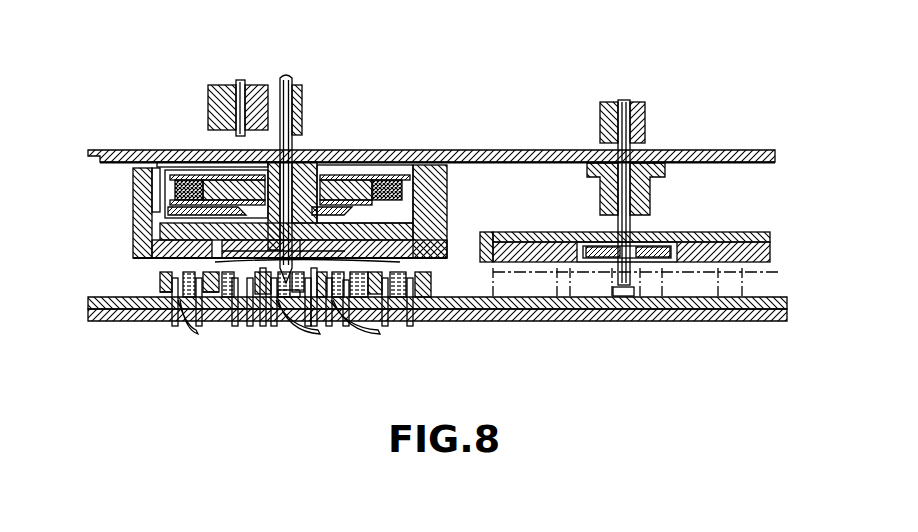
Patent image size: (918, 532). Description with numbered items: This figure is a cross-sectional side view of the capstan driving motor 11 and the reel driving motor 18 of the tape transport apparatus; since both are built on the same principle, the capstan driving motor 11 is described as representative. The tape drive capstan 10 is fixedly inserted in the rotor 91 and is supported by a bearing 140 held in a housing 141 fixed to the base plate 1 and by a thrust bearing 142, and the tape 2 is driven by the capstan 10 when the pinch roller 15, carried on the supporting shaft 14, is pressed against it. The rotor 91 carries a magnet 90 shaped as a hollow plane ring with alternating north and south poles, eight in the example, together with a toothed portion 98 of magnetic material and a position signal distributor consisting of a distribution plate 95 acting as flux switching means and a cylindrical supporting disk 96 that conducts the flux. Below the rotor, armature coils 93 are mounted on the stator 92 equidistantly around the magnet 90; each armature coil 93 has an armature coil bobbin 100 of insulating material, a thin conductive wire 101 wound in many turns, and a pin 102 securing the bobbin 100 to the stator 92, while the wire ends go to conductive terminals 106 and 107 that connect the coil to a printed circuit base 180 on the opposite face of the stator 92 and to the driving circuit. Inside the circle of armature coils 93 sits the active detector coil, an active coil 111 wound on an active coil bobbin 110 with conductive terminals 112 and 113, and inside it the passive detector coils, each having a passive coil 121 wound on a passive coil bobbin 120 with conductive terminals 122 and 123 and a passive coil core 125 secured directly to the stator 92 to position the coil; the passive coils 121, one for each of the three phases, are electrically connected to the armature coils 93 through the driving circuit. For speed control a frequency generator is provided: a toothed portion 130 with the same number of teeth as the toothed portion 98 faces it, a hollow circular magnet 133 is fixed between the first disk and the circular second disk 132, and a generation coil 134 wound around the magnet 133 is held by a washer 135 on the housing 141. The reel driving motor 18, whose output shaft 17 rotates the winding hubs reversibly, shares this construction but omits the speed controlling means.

The base plate 1 is at (117, 150).
The tape 2 is at (294, 106).
The tape drive capstan 10 is at (300, 130).
The capstan driving motor 11 is at (398, 72).
The supporting shaft 14 is at (241, 80).
The pinch roller 15 is at (268, 107).
The output shaft 17 is at (647, 120).
The reel driving motor 18 is at (571, 110).
The magnet 90 is at (424, 236).
The rotor 91 is at (135, 185).
The stator 92 is at (90, 300).
The armature coils 93 is at (159, 273).
The distribution plate 95 is at (370, 244).
The supporting disk 96 is at (150, 238).
The toothed portion 98 is at (400, 200).
The armature coil bobbin 100 is at (152, 312).
The conductive wire 101 is at (160, 283).
The pin 102 is at (197, 325).
The conductive terminal 106 is at (166, 328).
The conductive terminal 107 is at (222, 328).
The active coil bobbin 110 is at (245, 322).
The active coil 111 is at (660, 309).
The conductive terminal 112 is at (282, 330).
The conductive terminal 113 is at (400, 322).
The passive coil bobbin 120 is at (348, 257).
The passive coil 121 is at (658, 311).
The conductive terminal 122 is at (303, 324).
The conductive terminal 123 is at (322, 334).
The passive coil core 125 is at (372, 334).
The toothed portion 130 is at (455, 162).
The second disk 132 is at (380, 182).
The magnet 133 is at (400, 182).
The generation coil 134 is at (420, 168).
The washer 135 is at (215, 209).
The bearing 140 is at (300, 152).
The housing 141 is at (323, 168).
The thrust bearing 142 is at (344, 322).
The printed circuit base 180 is at (90, 312).